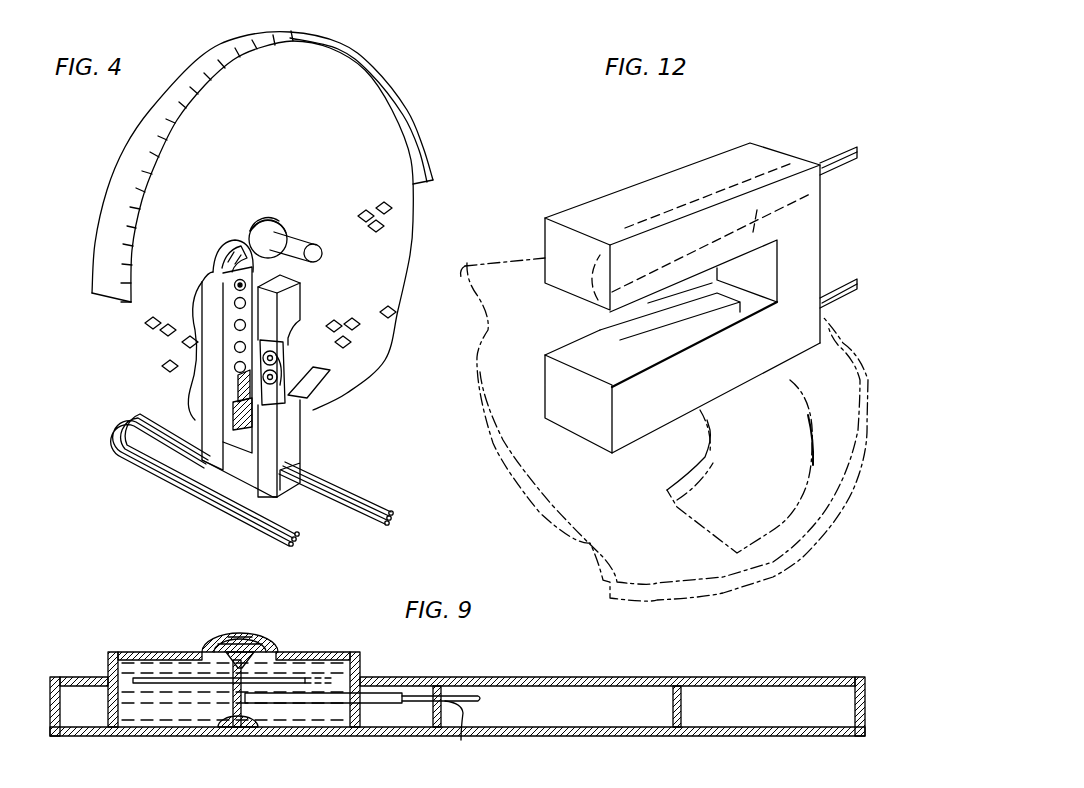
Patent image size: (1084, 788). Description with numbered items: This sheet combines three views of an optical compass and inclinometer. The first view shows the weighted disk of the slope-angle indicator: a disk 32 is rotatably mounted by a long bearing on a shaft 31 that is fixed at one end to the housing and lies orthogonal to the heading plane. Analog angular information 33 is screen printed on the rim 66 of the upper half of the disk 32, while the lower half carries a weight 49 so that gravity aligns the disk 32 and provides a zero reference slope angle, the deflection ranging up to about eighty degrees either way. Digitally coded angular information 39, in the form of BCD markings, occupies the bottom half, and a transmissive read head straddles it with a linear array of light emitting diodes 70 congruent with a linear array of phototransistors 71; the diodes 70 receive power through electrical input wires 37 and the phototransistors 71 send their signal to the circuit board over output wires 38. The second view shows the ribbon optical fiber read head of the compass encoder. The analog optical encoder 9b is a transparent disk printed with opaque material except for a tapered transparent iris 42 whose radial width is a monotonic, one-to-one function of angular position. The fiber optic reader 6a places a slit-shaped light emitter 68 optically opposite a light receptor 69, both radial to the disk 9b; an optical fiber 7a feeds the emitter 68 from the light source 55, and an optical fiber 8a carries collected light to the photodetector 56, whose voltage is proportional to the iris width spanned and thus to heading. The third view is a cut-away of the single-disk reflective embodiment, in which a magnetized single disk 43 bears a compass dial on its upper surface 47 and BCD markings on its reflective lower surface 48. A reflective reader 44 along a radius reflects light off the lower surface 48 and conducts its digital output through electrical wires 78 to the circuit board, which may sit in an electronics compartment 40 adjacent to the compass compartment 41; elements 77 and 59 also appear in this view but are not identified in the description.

In FIG. 4, the analog angular information 33 is at (193, 48).
In FIG. 4, the rim 66 is at (380, 70).
In FIG. 4, the disk 32 is at (342, 139).
In FIG. 4, the shaft 31 is at (316, 246).
In FIG. 4, the phototransistors 71 is at (240, 283).
In FIG. 4, the angular information 39 is at (360, 327).
In FIG. 4, the light emitting diodes 70 is at (277, 355).
In FIG. 4, the electrical input wires 37 is at (330, 480).
In FIG. 4, the weight 49 is at (225, 463).
In FIG. 4, the output wires 38 is at (246, 523).
In FIG. 12, the optical fiber 7a is at (830, 150).
In FIG. 12, the light source 55 is at (881, 140).
In FIG. 12, the light emitter 68 is at (692, 218).
In FIG. 12, the fiber optic reader 6a is at (793, 217).
In FIG. 12, the analog optical encoder 9b is at (512, 263).
In FIG. 12, the photodetector 56 is at (882, 266).
In FIG. 12, the optical fiber 8a is at (833, 294).
In FIG. 12, the light receptor 69 is at (658, 380).
In FIG. 12, the transparent iris 42 is at (767, 517).
In FIG. 9, the upper surface 47 is at (152, 677).
In FIG. 9, the compass compartment 41 is at (322, 662).
In FIG. 9, the electrical wires 78 is at (470, 694).
In FIG. 9, the single disk 43 is at (141, 697).
In FIG. 9, the lower surface 48 is at (173, 687).
In FIG. 9, the reflective reader 44 is at (305, 718).
In FIG. 9, the wire 77 is at (461, 740).
In FIG. 9, the electronics compartment 40 is at (566, 712).
In FIG. 9, the compartment 59 is at (781, 712).